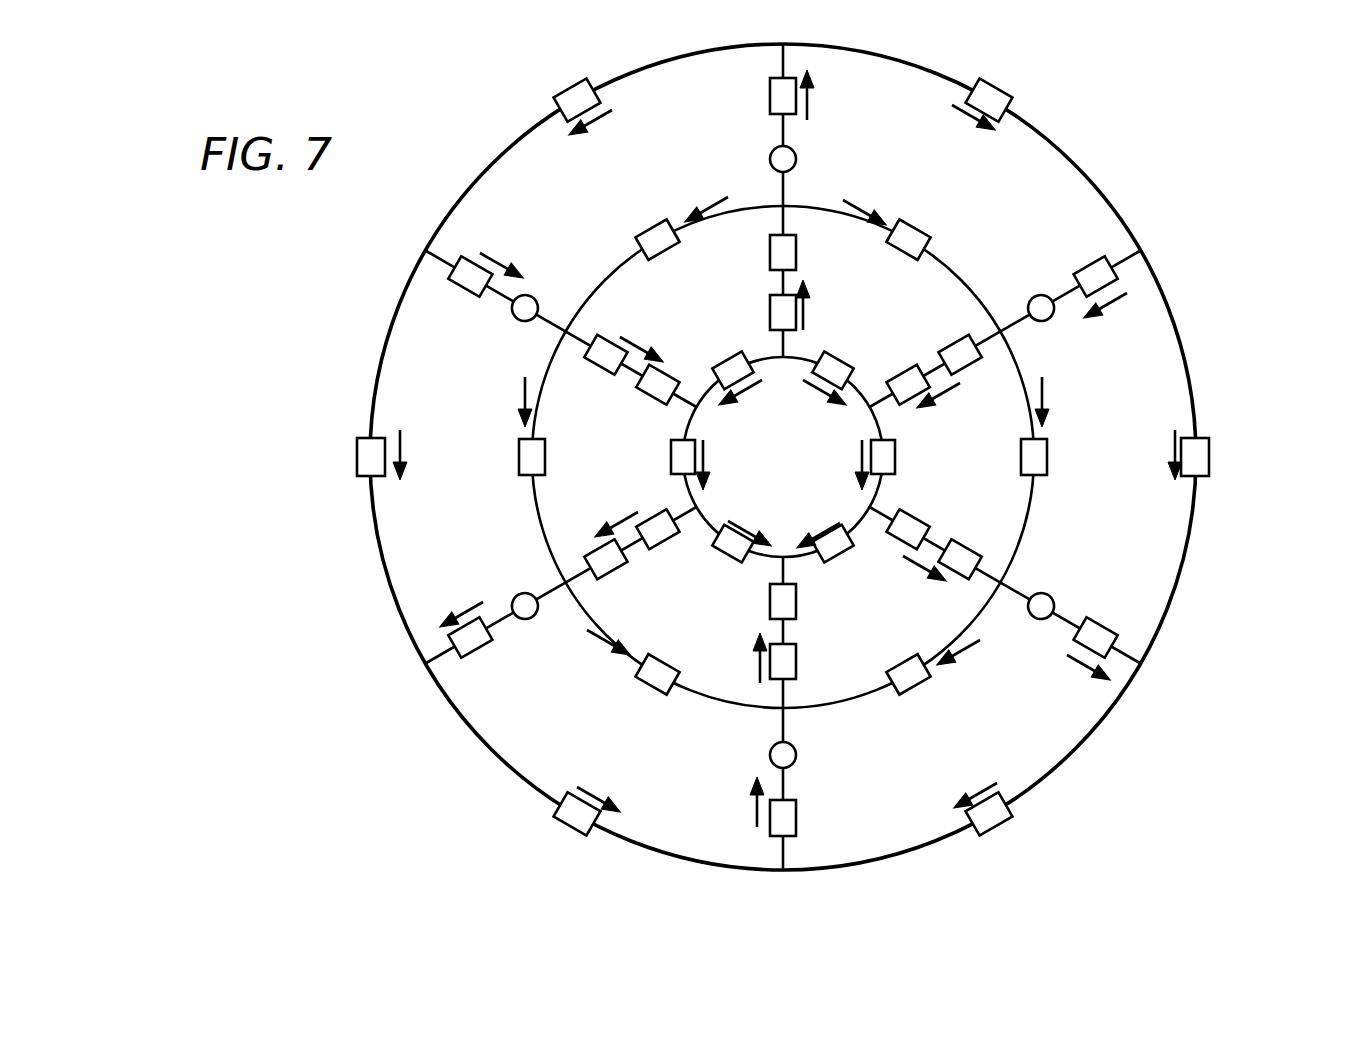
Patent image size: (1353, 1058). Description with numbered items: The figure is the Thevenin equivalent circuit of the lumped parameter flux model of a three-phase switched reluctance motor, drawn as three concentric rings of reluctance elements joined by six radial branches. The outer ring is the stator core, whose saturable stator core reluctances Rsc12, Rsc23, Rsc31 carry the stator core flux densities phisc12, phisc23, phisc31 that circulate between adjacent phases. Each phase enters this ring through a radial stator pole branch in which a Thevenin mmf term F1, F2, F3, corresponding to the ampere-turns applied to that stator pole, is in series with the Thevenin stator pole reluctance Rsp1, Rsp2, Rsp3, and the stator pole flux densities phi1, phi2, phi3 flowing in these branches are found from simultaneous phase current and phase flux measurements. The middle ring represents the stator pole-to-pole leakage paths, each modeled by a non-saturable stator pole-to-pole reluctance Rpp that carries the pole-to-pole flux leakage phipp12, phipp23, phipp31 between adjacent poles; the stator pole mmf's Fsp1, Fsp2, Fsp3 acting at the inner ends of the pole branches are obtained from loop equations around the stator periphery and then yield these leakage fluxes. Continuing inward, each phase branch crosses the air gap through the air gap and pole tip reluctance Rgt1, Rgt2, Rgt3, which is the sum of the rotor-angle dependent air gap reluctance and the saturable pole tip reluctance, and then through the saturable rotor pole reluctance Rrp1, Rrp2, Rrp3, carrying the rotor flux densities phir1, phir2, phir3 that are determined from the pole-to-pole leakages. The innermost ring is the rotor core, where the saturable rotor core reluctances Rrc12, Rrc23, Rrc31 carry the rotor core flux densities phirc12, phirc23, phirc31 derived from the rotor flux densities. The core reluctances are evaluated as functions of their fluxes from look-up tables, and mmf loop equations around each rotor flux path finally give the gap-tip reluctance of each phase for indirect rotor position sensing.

The stator core reluctance Rsc12 is at (996, 84).
The stator core reluctance Rsc23 is at (354, 459).
The stator core reluctance Rsc31 is at (572, 90).
The stator pole-to-pole reluctance Rpp is at (649, 232).
The rotor core reluctance Rrc12 is at (856, 360).
The rotor core reluctance Rrc23 is at (671, 458).
The rotor core reluctance Rrc31 is at (717, 352).
The stator pole reluctance Rsp1 is at (770, 101).
The stator pole reluctance Rsp2 is at (1084, 266).
The stator pole reluctance Rsp3 is at (451, 294).
The mmf term F1 is at (798, 768).
The mmf term F2 is at (1042, 298).
The mmf term F3 is at (1052, 586).
The stator pole mmf Fsp1 is at (788, 228).
The stator pole mmf Fsp2 is at (1004, 350).
The stator pole mmf Fsp3 is at (567, 352).
The air gap and pole tip reluctance Rgt1 is at (769, 258).
The air gap and pole tip reluctance Rgt2 is at (950, 334).
The air gap and pole tip reluctance Rgt3 is at (606, 340).
The rotor pole reluctance Rrp1 is at (800, 290).
The rotor pole reluctance Rrp2 is at (898, 411).
The rotor pole reluctance Rrp3 is at (648, 398).
The stator pole flux density phi1 is at (787, 453).
The stator pole flux density phi2 is at (787, 460).
The stator pole flux density phi3 is at (795, 463).
The stator core flux density phisc12 is at (786, 458).
The stator core flux density phisc23 is at (787, 455).
The stator core flux density phisc31 is at (782, 459).
The pole-to-pole flux leakage phipp12 is at (715, 427).
The pole-to-pole flux leakage phipp23 is at (784, 400).
The pole-to-pole flux leakage phipp31 is at (845, 428).
The rotor flux density phir1 is at (780, 486).
The rotor flux density phir2 is at (776, 460).
The rotor flux density phir3 is at (783, 459).
The rotor core flux density phirc12 is at (787, 463).
The rotor core flux density phirc23 is at (782, 465).
The rotor core flux density phirc31 is at (776, 464).